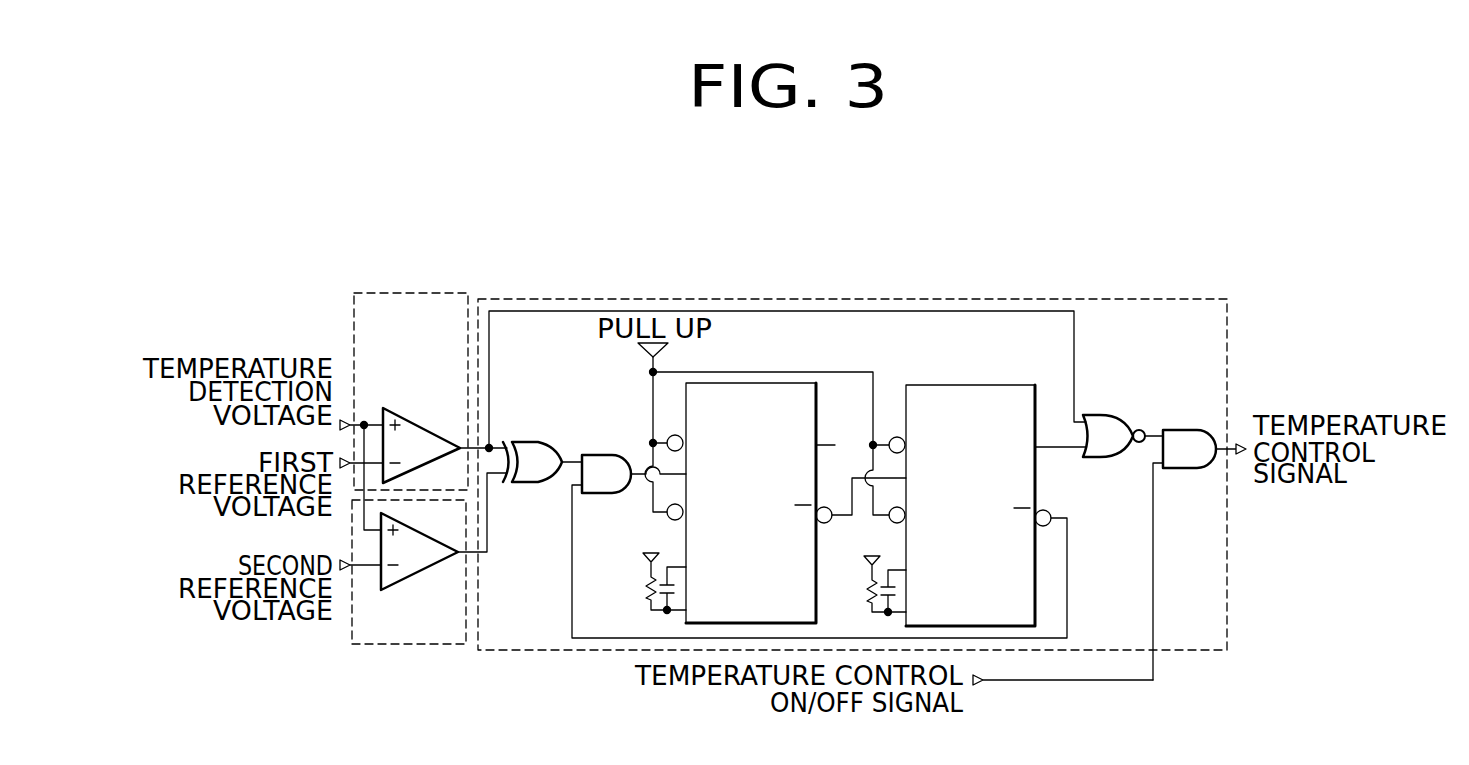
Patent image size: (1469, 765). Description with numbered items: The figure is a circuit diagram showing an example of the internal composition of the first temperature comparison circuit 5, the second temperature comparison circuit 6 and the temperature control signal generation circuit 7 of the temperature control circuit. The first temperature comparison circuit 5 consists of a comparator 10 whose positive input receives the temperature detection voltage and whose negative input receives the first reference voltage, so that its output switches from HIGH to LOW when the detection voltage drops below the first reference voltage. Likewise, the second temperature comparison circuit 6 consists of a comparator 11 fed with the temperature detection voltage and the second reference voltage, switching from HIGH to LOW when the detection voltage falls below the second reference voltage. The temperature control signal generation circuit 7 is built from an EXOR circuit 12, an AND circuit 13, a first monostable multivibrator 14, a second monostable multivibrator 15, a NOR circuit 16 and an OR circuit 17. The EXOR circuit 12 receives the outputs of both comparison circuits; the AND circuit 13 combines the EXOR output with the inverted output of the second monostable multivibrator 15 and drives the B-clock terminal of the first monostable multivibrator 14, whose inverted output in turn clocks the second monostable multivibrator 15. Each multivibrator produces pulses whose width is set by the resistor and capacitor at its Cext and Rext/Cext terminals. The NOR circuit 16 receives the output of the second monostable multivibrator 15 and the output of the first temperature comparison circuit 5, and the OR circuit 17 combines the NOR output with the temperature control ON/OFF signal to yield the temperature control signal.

The first temperature comparison circuit 5 is at (418, 293).
The second temperature comparison circuit 6 is at (410, 650).
The temperature control signal generation circuit 7 is at (776, 298).
The comparator 10 is at (408, 420).
The comparator 11 is at (415, 570).
The EXOR circuit 12 is at (527, 482).
The AND circuit 13 is at (604, 495).
The first monostable multivibrator 14 is at (816, 430).
The second monostable multivibrator 15 is at (950, 383).
The NOR circuit 16 is at (1100, 415).
The OR circuit 17 is at (1183, 430).